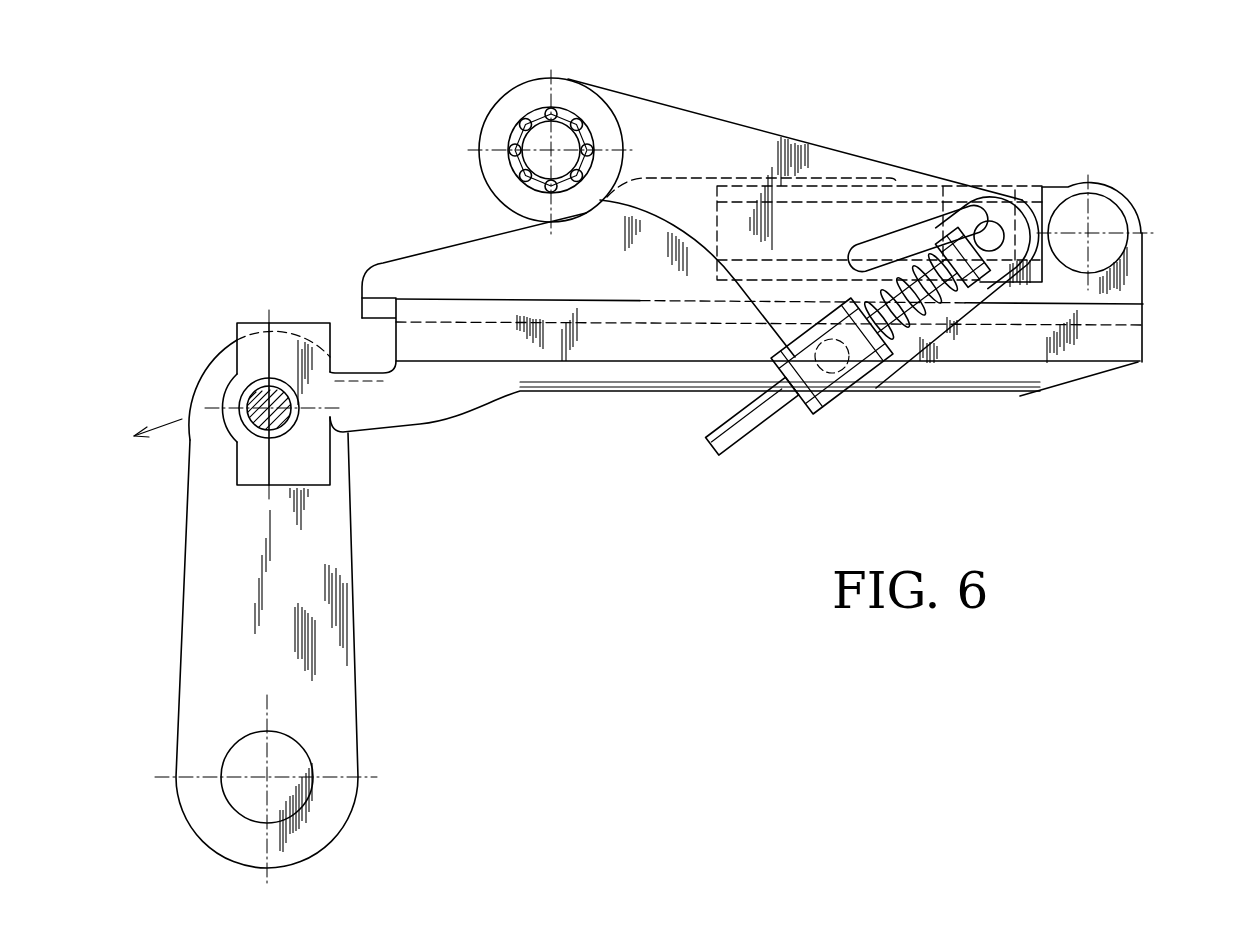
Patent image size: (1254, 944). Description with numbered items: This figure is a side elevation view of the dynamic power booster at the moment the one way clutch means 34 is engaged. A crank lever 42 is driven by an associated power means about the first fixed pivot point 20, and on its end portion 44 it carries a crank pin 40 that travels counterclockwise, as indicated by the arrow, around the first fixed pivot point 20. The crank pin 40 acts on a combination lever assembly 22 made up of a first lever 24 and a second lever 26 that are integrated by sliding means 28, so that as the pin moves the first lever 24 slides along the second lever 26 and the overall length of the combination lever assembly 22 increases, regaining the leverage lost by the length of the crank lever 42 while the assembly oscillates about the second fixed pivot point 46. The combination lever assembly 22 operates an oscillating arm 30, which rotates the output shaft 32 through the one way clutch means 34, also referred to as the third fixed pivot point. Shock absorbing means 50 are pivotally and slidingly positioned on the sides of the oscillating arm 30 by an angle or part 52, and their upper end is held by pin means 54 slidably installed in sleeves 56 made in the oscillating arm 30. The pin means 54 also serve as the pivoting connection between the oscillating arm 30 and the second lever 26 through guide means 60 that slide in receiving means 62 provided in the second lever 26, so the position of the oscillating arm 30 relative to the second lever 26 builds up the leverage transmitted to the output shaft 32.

The first fixed pivot point 20 is at (302, 758).
The combination lever assembly 22 is at (361, 298).
The first lever 24 is at (552, 393).
The second lever 26 is at (432, 253).
The sliding means 28 is at (1143, 332).
The oscillating arm 30 is at (752, 128).
The output shaft 32 is at (562, 135).
The one way clutch means 34 is at (522, 118).
The crank pin 40 is at (243, 409).
The crank lever 42 is at (185, 597).
The end portion 44 is at (230, 346).
The second fixed pivot point 46 is at (1113, 204).
The shock absorbing means 50 is at (913, 325).
The angle or part 52 is at (826, 418).
The pin means 54 is at (991, 219).
The sleeves 56 is at (895, 236).
The guide means 60 is at (1016, 198).
The receiving means 62 is at (939, 182).